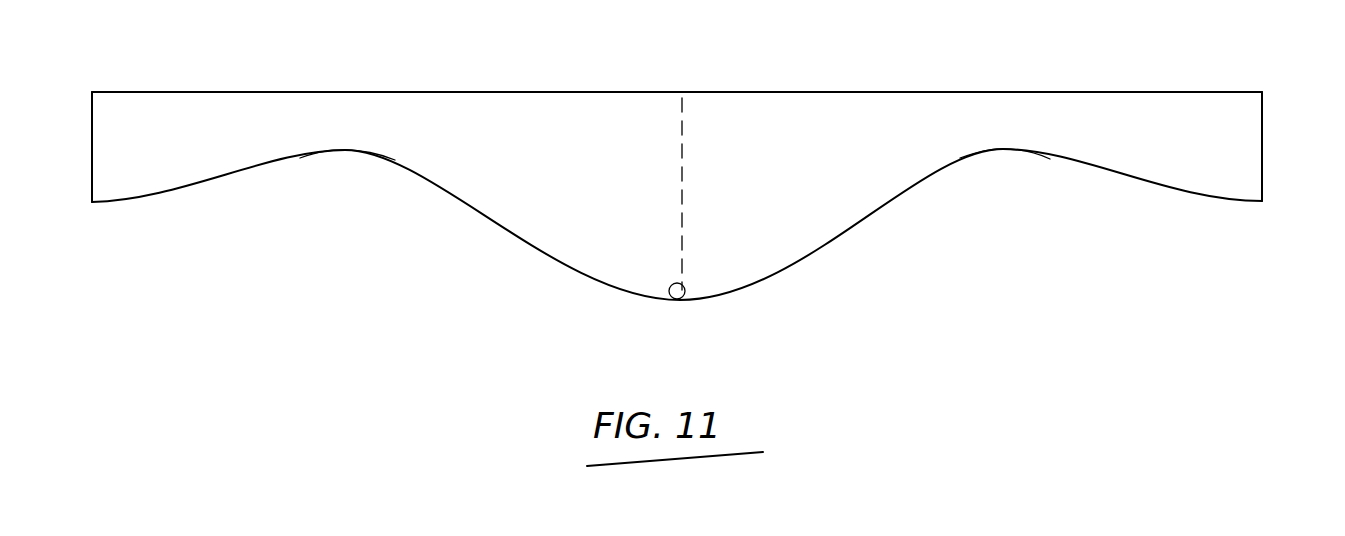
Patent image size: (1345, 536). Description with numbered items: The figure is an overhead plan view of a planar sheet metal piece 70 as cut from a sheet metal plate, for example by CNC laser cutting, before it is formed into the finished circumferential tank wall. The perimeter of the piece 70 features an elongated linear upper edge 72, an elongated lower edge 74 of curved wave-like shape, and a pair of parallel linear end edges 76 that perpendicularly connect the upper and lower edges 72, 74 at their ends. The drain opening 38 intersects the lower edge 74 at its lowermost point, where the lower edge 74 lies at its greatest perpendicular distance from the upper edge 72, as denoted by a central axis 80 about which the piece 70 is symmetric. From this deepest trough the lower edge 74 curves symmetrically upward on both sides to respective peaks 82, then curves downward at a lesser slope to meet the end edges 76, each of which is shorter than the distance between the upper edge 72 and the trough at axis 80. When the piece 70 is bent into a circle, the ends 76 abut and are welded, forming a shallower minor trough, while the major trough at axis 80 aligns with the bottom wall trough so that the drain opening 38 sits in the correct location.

The planar sheet metal piece 70 is at (690, 182).
The upper edge 72 is at (789, 92).
The lower edge 74 is at (820, 252).
The end edges 76 is at (92, 125).
The central axis 80 is at (687, 173).
The peaks 82 is at (358, 155).
The drain opening 38 is at (680, 300).